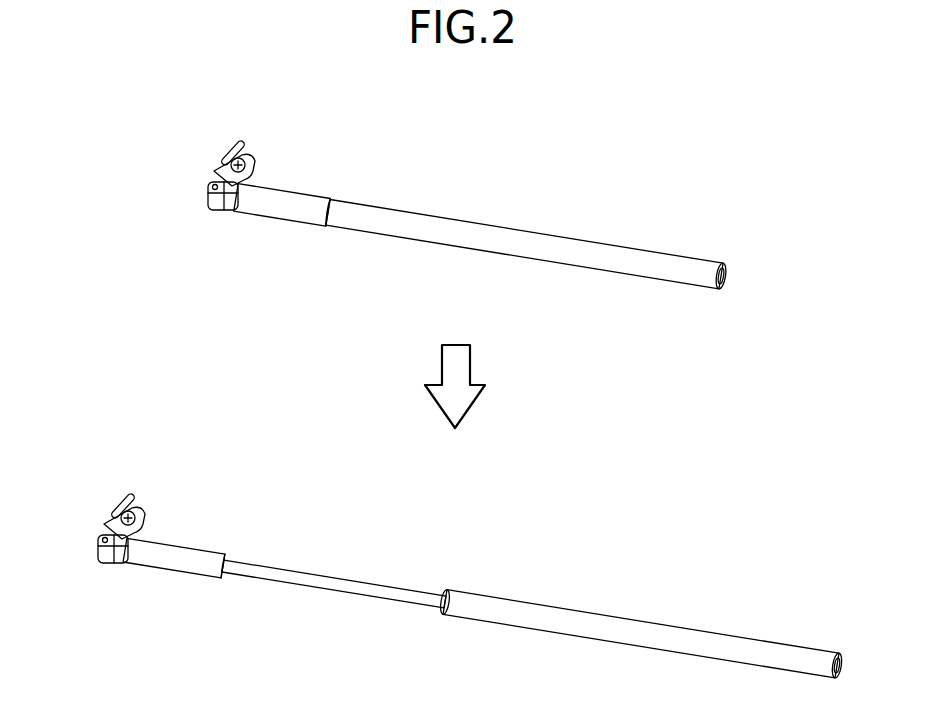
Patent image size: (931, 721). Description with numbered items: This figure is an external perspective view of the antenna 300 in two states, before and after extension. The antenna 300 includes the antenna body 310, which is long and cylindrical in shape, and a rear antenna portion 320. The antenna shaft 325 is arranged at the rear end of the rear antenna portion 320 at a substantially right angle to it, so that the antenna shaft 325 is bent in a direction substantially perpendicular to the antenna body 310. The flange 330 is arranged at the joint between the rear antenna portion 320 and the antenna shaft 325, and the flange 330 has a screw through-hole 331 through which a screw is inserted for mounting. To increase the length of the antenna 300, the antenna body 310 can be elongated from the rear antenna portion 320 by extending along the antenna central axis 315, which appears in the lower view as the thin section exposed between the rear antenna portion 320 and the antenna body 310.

The antenna 300 is at (792, 645).
The antenna body 310 is at (593, 252).
The antenna central axis 315 is at (335, 577).
The rear antenna portion 320 is at (283, 207).
The antenna shaft 325 is at (222, 155).
The flange 330 is at (253, 162).
The screw through-hole 331 is at (213, 175).